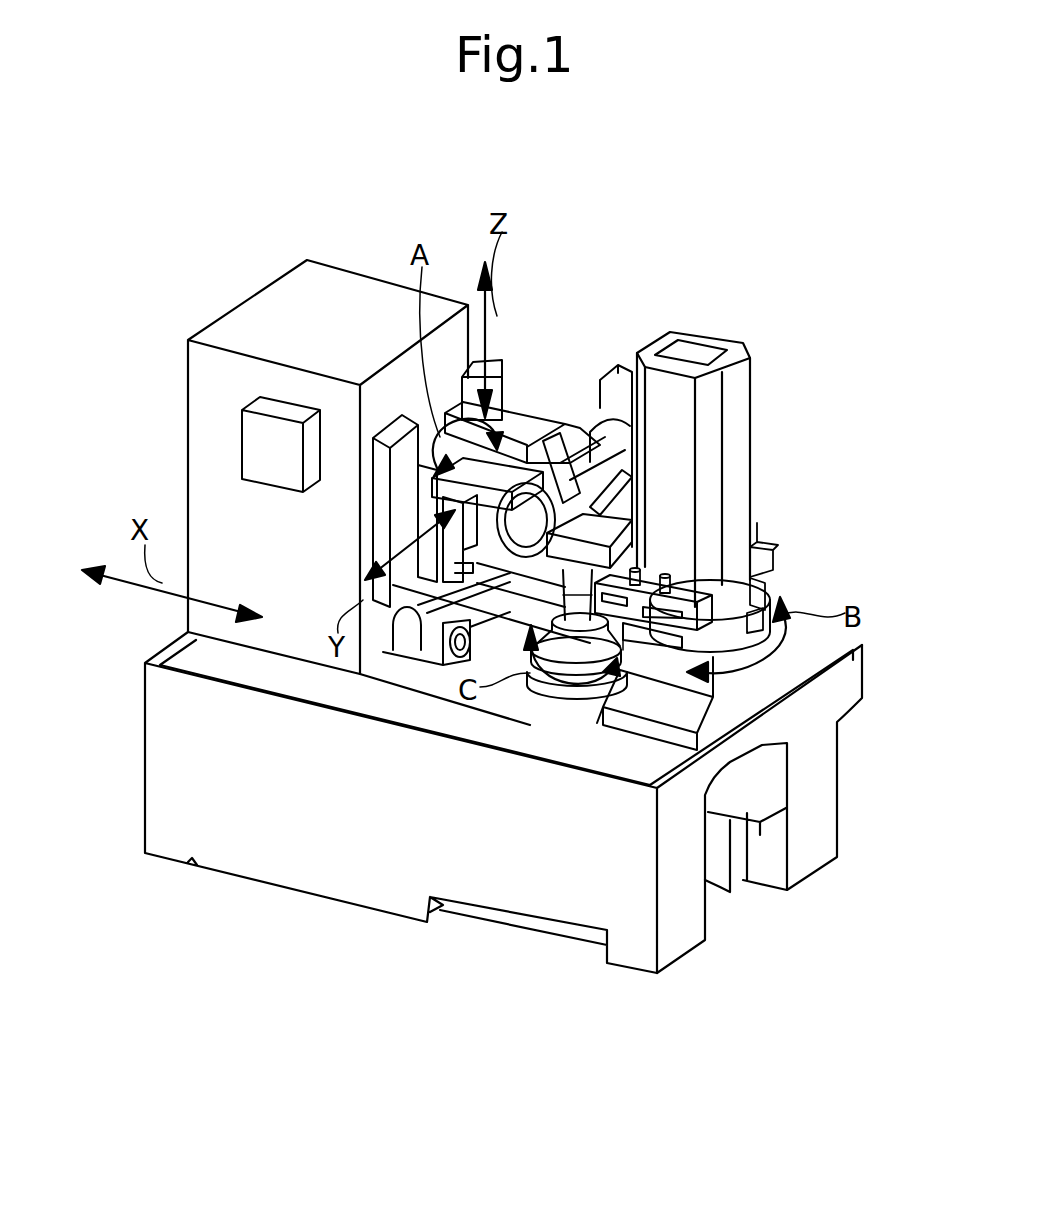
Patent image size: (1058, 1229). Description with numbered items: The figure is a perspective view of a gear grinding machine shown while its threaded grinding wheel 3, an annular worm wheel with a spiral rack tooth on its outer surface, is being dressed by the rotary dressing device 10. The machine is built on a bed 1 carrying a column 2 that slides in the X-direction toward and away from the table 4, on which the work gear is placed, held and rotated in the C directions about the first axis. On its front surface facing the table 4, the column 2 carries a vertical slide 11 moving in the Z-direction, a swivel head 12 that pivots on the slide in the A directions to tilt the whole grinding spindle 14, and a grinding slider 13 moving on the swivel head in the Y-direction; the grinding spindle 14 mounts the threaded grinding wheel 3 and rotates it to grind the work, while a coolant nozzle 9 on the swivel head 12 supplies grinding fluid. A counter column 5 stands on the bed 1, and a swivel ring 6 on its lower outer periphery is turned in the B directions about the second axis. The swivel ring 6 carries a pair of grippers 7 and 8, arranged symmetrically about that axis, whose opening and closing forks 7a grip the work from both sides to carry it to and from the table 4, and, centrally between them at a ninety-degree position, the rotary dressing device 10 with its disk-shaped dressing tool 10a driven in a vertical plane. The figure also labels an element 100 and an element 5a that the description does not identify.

The bed 1 is at (167, 798).
The column 2 is at (218, 430).
The control unit box 100 is at (263, 430).
The threaded grinding wheel 3 is at (560, 483).
The table 4 is at (575, 608).
The counter column 5 is at (707, 480).
The rotary base of tool post 5a is at (743, 675).
The swivel ring 6 is at (767, 585).
The gripper 7 is at (678, 590).
The opening and closing fork 7a is at (745, 676).
The gripper 8 is at (762, 540).
The coolant nozzle 9 is at (538, 424).
The rotary dressing device 10 is at (593, 563).
The dressing tool 10a is at (568, 525).
The vertical slide 11 is at (503, 375).
The swivel head 12 is at (428, 498).
The grinding slider 13 is at (572, 470).
The grinding spindle 14 is at (458, 640).